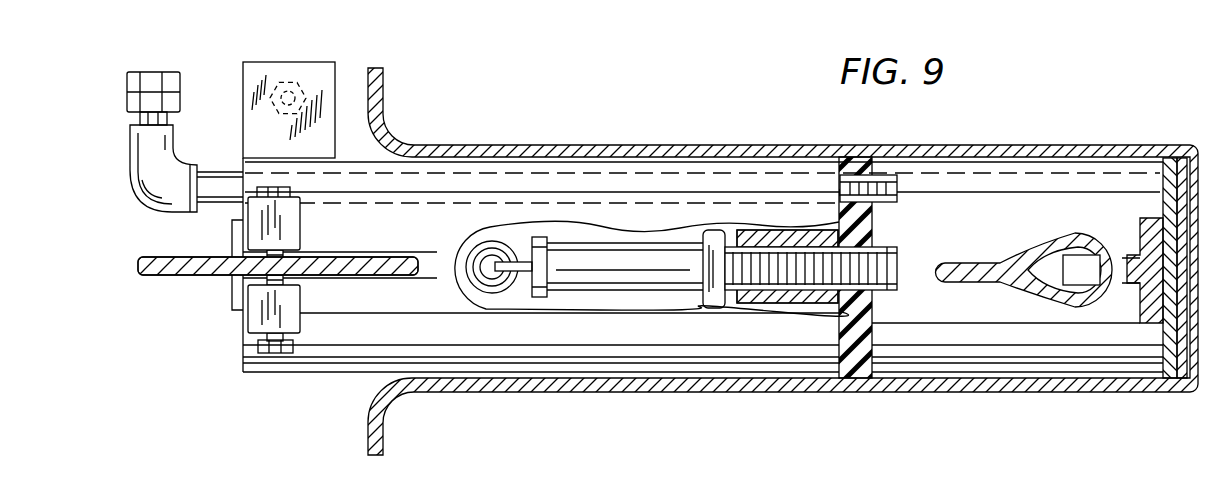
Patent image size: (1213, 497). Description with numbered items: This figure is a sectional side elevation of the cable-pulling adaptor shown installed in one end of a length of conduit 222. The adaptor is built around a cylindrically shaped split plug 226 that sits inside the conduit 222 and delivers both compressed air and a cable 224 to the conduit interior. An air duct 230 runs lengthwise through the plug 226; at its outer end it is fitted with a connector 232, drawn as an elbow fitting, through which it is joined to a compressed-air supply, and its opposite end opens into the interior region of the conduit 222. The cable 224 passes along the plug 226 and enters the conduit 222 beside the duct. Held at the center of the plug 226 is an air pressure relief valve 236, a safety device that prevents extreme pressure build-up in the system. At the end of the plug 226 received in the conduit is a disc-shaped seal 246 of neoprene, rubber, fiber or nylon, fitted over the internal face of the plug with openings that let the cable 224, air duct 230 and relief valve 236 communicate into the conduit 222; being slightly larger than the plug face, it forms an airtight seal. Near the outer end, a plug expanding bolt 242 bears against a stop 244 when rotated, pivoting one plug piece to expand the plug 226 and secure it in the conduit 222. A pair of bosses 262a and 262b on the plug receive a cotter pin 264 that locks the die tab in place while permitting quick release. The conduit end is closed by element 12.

The end cap 12 is at (1154, 150).
The conduit 222 is at (1074, 391).
The cable 224 is at (175, 275).
The split plug 226 is at (278, 376).
The air duct 230 is at (742, 146).
The connector 232 is at (138, 168).
The air pressure relief valve 236 is at (817, 290).
The plug expanding bolt 242 is at (308, 62).
The stop 244 is at (252, 68).
The disc-shaped seal 246 is at (858, 378).
The boss 262a is at (260, 215).
The boss 262b is at (253, 322).
The cotter pin 264 is at (270, 187).